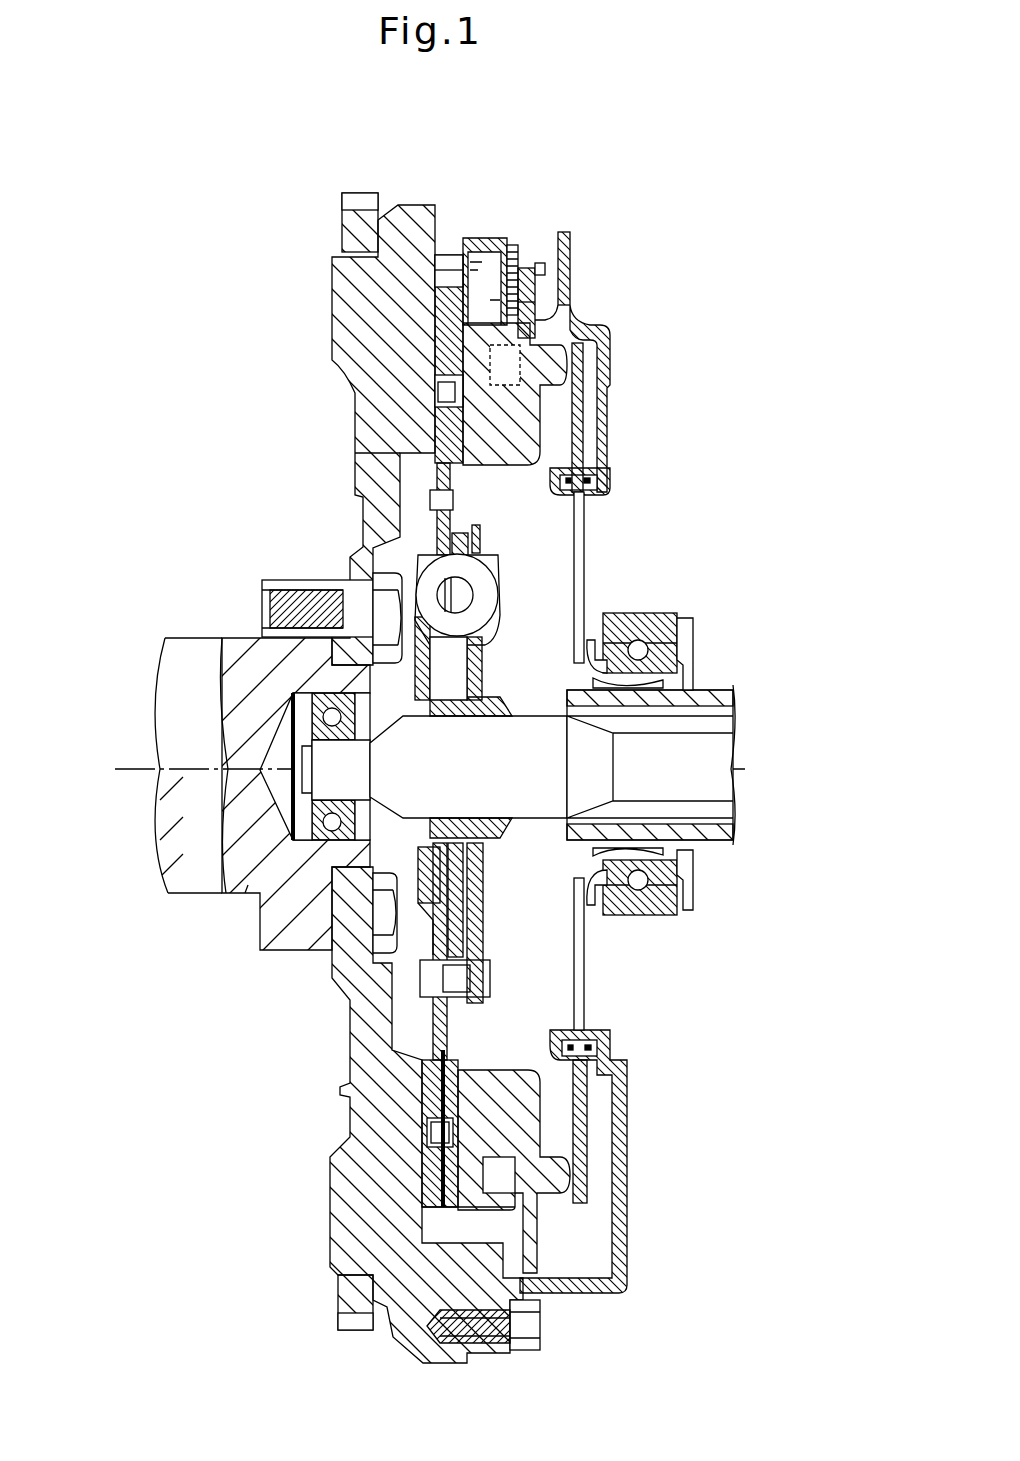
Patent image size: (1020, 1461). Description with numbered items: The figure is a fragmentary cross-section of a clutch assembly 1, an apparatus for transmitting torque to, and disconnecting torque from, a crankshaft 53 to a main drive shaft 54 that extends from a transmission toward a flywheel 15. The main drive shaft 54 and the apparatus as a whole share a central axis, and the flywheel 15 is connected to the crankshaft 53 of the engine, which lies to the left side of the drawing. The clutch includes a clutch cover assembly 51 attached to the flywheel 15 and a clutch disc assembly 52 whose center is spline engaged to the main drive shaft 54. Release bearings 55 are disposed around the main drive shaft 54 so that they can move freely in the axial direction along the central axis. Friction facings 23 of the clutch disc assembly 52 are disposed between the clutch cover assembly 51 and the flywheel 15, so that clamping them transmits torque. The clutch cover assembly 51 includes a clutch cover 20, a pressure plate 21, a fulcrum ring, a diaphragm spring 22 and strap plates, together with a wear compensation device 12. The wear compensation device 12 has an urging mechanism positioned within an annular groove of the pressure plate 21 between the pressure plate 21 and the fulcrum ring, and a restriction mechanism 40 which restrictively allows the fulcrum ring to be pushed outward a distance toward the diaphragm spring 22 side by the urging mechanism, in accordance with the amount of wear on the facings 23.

The clutch assembly 1 is at (278, 200).
The wear compensation device 12 is at (585, 292).
The flywheel 15 is at (348, 333).
The clutch cover 20 is at (598, 443).
The pressure plate 21 is at (505, 468).
The diaphragm spring 22 is at (590, 555).
The friction facings 23 is at (452, 458).
The restriction mechanism 40 is at (528, 222).
The clutch cover assembly 51 is at (632, 332).
The clutch disc assembly 52 is at (400, 563).
The crankshaft 53 is at (252, 925).
The main drive shaft 54 is at (541, 800).
The release bearings 55 is at (652, 608).